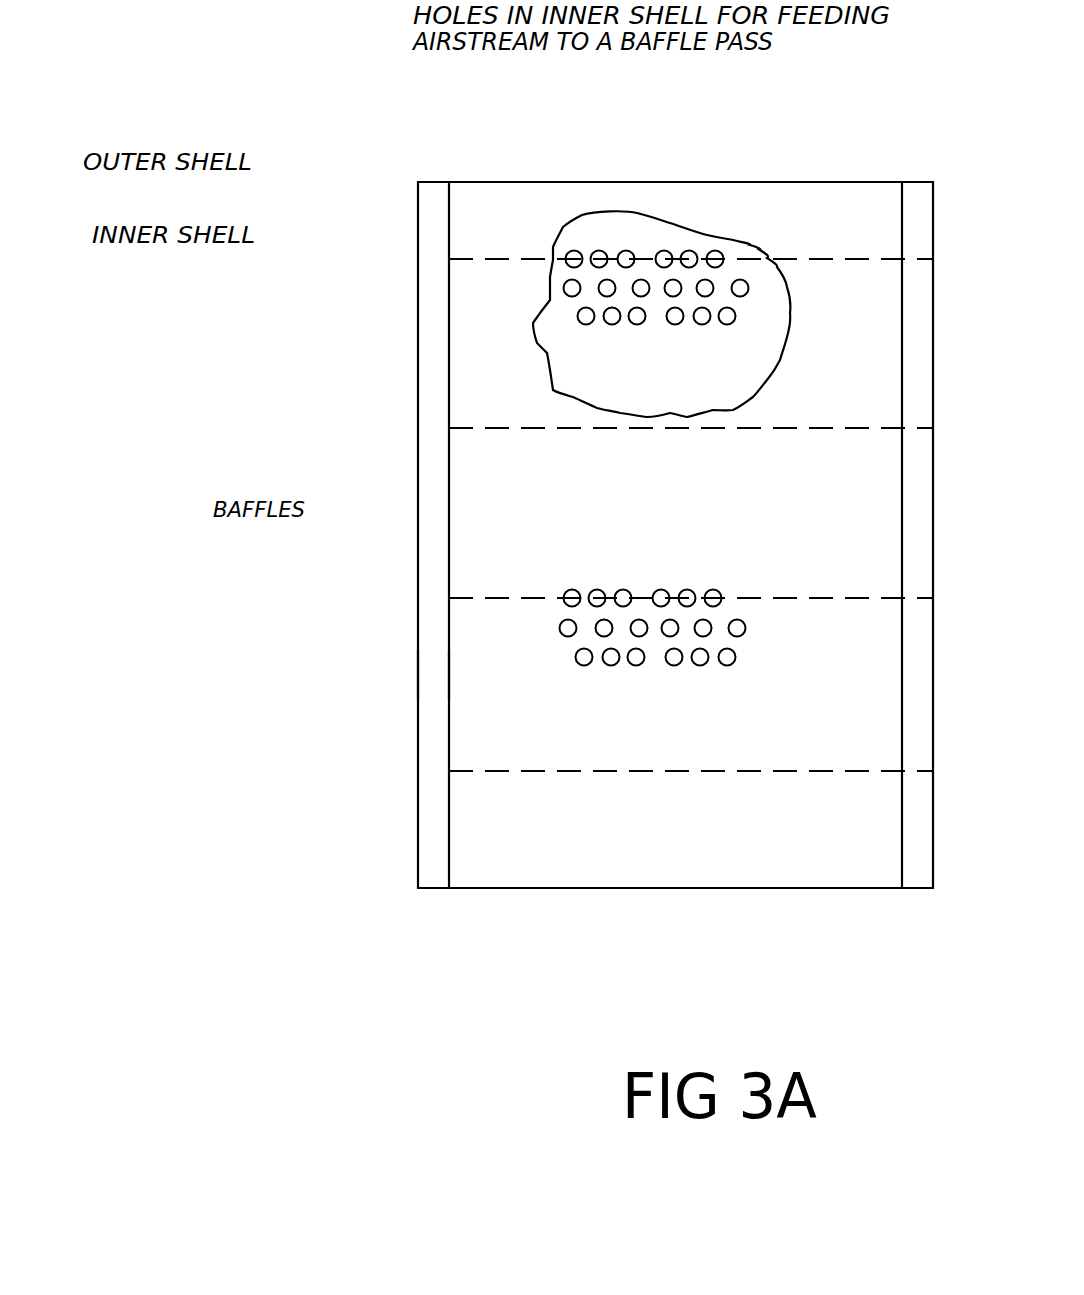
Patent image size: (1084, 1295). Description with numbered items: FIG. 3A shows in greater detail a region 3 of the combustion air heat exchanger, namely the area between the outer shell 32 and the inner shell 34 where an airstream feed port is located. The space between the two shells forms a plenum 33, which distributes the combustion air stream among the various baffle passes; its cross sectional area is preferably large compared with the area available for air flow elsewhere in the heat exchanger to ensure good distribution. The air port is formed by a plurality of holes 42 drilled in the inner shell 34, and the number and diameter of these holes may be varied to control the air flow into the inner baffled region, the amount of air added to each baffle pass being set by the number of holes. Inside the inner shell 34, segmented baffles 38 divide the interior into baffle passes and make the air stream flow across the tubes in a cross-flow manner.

The region comprising an airstream feed port 3 is at (537, 345).
The outer shell 32 is at (412, 207).
The plenum 33 is at (430, 677).
The inner shell 34 is at (434, 300).
The segmented baffles 38 is at (526, 446).
The holes 42 is at (752, 249).